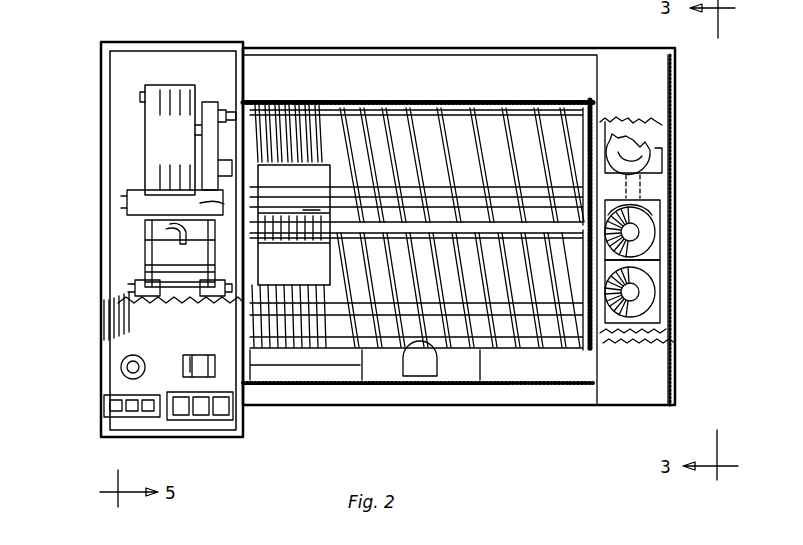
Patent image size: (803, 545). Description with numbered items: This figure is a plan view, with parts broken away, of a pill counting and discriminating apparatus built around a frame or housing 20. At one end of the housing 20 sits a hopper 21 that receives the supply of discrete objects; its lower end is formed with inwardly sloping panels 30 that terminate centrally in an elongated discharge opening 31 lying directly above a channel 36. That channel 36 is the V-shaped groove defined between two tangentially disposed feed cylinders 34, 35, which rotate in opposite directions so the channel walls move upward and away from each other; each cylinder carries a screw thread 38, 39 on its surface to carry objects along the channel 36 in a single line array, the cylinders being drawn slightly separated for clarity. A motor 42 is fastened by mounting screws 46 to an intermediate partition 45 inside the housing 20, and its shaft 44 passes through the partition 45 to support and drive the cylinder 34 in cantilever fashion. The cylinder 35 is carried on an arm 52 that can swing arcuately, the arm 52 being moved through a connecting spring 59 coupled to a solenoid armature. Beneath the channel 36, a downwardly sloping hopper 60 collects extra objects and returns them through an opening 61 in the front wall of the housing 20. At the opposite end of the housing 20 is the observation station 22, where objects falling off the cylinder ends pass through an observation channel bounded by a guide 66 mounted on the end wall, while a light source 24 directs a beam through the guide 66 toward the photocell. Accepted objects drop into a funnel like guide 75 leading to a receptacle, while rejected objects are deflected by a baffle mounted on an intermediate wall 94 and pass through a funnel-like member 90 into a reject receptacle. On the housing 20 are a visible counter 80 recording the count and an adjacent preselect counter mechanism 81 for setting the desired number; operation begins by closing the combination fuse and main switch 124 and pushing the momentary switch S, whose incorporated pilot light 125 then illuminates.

The frame or housing 20 is at (457, 46).
The intermediate partition 45 is at (245, 62).
The shaft 44 is at (234, 150).
The motor 42 is at (181, 146).
The mounting screws 46 is at (196, 207).
The connecting spring 59 is at (143, 230).
The arm 52 is at (145, 265).
The combination fuse and main switch 124 is at (126, 362).
The momentary switch S is at (190, 356).
The pilot light 125 is at (204, 357).
The visible counter 80 is at (104, 405).
The preselect counter mechanism 81 is at (205, 420).
The hopper 21 is at (304, 165).
The screw thread 38 is at (387, 110).
The feed cylinder 34 is at (485, 125).
The channel 36 is at (532, 212).
The inwardly sloping panels 30 is at (290, 194).
The elongated discharge opening 31 is at (321, 196).
The intermediate wall 94 is at (600, 122).
The light source 24 is at (632, 145).
The observation station 22 is at (645, 190).
The guide 66 is at (640, 218).
The funnel like guide 75 is at (640, 245).
The funnel-like member 90 is at (645, 298).
The downwardly sloping hopper 60 is at (342, 365).
The opening 61 is at (415, 362).
The screw thread 39 is at (452, 350).
The feed cylinder 35 is at (540, 336).